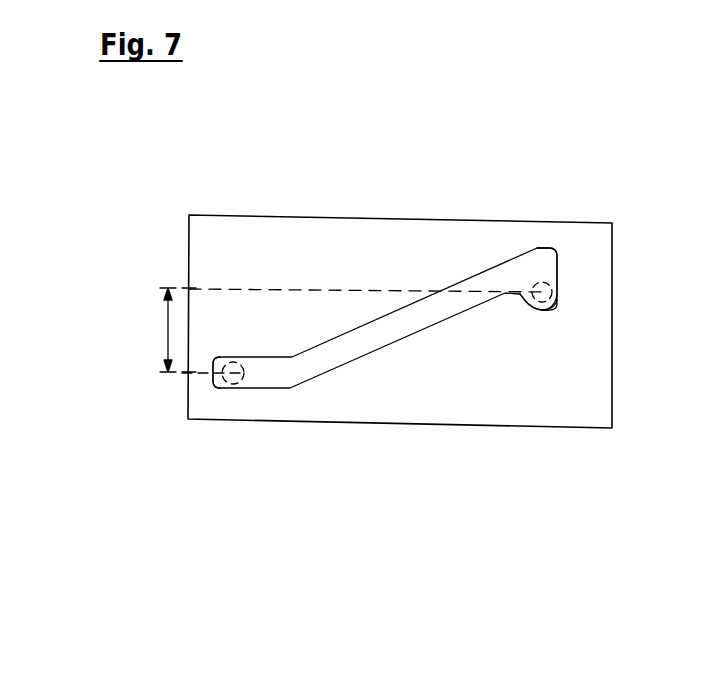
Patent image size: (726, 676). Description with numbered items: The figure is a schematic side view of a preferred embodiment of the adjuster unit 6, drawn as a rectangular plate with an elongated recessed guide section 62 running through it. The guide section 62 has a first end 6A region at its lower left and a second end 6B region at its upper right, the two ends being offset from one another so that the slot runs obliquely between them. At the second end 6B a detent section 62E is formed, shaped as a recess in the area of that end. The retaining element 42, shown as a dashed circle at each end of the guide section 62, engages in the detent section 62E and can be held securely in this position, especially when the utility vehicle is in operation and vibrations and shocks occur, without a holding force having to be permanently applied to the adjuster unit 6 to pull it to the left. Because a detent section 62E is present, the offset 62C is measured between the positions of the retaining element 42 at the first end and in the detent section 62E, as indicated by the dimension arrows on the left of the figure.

The adjuster unit 6 is at (414, 210).
The first end of plate 6A is at (241, 403).
The second end of plate 6B is at (567, 243).
The retaining element 42 is at (250, 371).
The recessed guide section 62 is at (398, 335).
The offset 62C is at (174, 330).
The detent section 62E is at (553, 309).